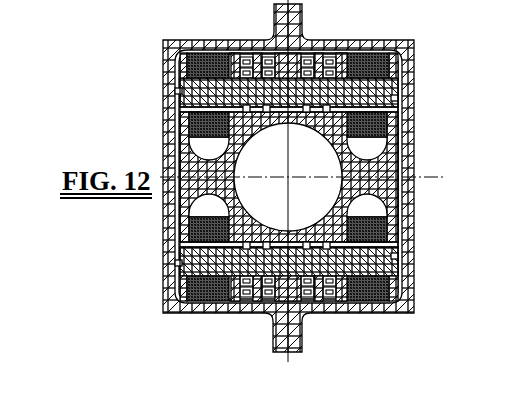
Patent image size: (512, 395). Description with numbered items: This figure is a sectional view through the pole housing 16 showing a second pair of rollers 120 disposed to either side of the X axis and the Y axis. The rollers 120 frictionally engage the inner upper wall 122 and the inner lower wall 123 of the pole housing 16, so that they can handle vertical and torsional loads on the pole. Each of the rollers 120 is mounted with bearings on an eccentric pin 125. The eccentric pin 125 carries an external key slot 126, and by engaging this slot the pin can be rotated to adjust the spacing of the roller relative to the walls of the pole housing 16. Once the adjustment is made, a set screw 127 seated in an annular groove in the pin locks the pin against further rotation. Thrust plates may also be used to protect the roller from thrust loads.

The pole housing 16 is at (413, 235).
The rollers 120 is at (410, 57).
The inner upper wall 122 is at (200, 57).
The inner lower wall 123 is at (207, 293).
The eccentric pin 125 is at (370, 90).
The external key slot 126 is at (405, 99).
The set screw 127 is at (331, 62).
The X axis X is at (432, 180).